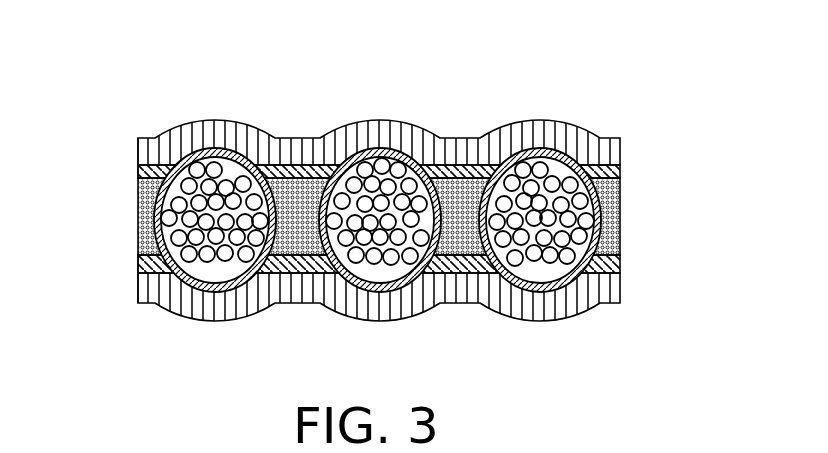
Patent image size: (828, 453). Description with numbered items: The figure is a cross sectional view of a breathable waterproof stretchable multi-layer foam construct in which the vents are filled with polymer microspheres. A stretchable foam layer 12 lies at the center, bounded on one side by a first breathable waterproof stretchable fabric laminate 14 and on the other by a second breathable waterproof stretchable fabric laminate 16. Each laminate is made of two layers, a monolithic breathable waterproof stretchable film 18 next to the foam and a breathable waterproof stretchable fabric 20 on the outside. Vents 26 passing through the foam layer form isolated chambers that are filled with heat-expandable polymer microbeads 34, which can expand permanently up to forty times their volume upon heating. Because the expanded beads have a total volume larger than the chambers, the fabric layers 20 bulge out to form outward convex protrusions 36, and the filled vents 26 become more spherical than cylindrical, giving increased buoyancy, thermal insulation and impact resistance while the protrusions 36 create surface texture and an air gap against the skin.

The stretchable foam layer 12 is at (134, 215).
The first breathable waterproof stretchable fabric laminate 14 is at (624, 180).
The second breathable waterproof stretchable fabric laminate 16 is at (624, 303).
The monolithic breathable waterproof stretchable film 18 is at (134, 172).
The breathable waterproof stretchable fabric 20 is at (134, 155).
The vents 26 is at (262, 173).
The polymer microbeads 34 is at (378, 190).
The outward convex protrusions 36 is at (220, 135).